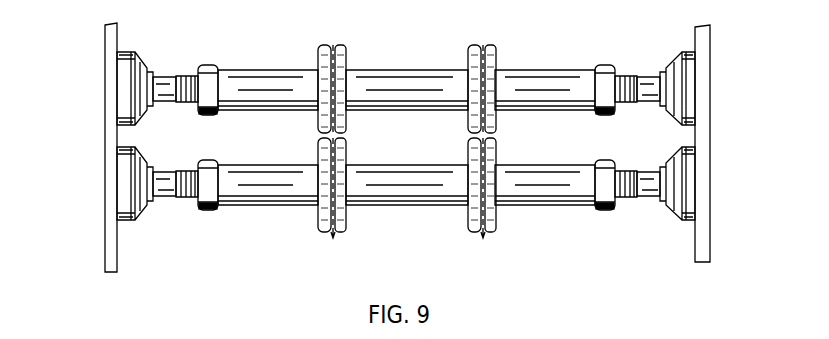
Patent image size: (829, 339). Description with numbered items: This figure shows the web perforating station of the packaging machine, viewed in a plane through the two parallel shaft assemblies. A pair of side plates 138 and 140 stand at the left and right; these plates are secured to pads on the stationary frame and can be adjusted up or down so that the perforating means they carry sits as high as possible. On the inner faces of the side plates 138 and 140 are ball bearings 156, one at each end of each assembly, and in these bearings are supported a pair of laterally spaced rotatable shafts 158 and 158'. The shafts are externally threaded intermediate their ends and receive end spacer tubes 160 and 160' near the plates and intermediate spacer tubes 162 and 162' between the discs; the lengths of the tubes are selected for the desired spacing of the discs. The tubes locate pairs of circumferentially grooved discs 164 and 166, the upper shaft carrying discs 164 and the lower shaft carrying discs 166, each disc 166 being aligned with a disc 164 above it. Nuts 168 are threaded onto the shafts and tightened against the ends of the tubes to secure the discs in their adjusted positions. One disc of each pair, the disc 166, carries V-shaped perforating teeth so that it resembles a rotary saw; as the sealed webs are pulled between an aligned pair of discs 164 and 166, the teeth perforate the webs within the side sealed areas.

The side plate 138 is at (108, 38).
The side plate 140 is at (710, 40).
The ball bearing 156 is at (125, 80).
The rotatable shaft 158 is at (154, 222).
The rotatable shaft 158' is at (181, 53).
The end spacer tube 160 is at (268, 218).
The end spacer tube 160' is at (268, 57).
The intermediate spacer tube 162 is at (407, 217).
The intermediate spacer tube 162' is at (407, 57).
The circumferentially grooved disc 164 is at (323, 45).
The circumferentially grooved disc 166 is at (323, 233).
The nut 168 is at (208, 64).